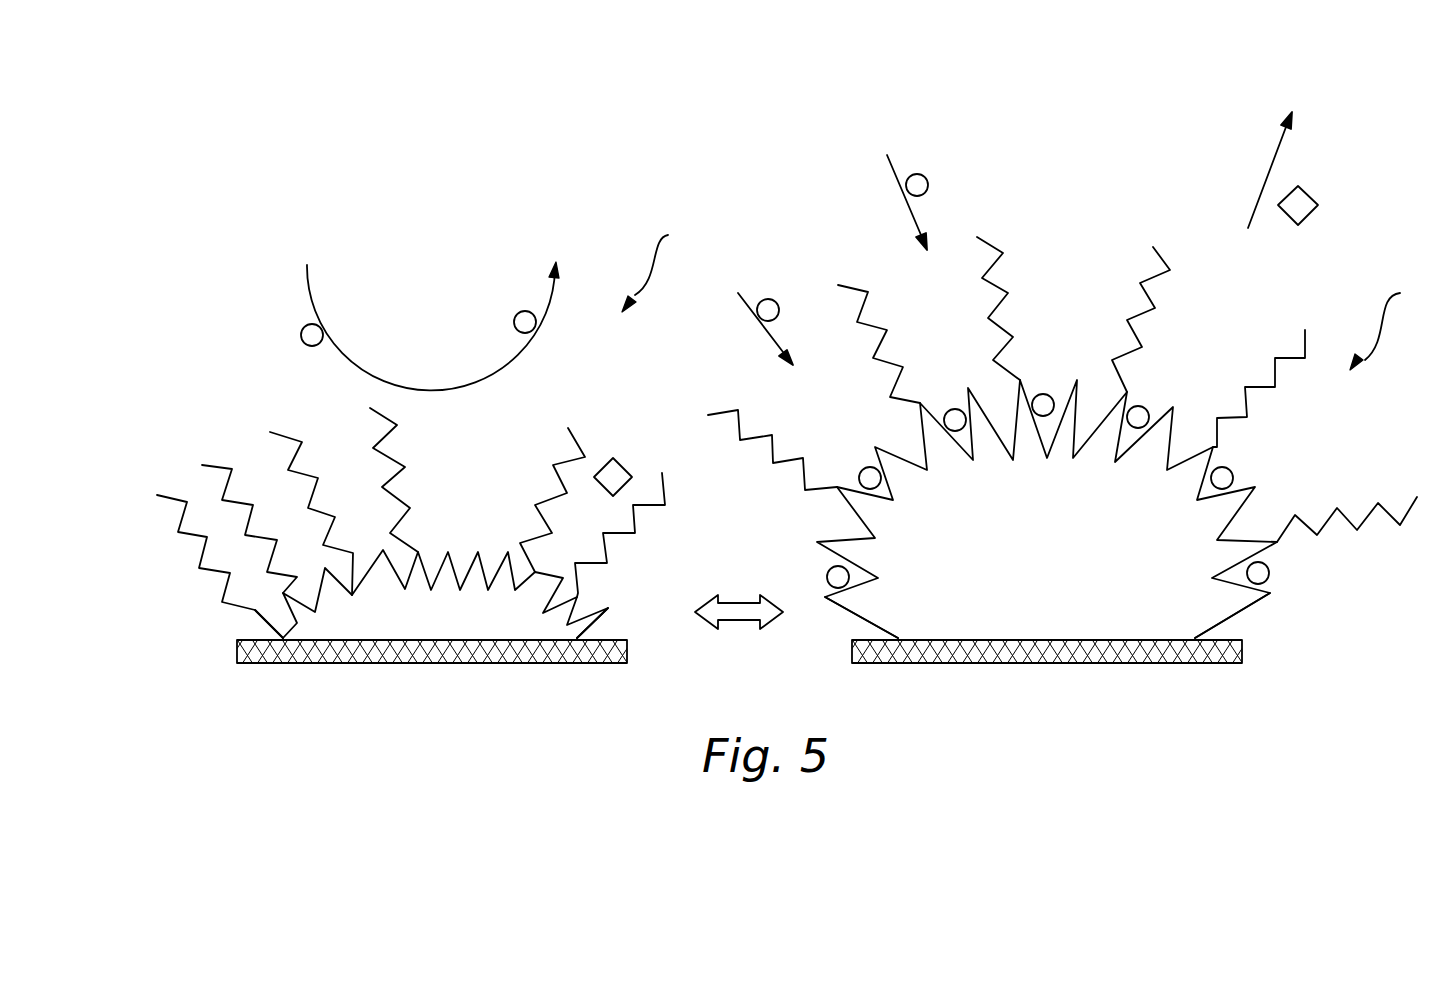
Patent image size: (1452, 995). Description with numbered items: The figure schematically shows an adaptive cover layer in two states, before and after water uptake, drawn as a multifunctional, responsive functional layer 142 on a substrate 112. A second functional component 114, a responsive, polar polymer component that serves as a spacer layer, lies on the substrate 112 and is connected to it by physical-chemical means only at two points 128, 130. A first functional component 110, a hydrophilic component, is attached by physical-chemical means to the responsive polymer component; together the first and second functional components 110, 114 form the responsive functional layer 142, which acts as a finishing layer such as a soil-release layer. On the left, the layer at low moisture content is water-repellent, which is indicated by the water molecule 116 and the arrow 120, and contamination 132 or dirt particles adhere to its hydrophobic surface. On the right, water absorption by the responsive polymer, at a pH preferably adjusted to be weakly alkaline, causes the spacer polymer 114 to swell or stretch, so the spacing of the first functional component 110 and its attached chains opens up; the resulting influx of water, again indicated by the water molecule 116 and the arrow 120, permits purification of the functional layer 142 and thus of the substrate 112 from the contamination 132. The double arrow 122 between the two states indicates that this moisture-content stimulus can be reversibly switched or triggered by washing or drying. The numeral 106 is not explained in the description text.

The deposition process 106 is at (238, 172).
The first functional component 110 is at (287, 455).
The substrate 112 is at (450, 663).
The second functional component 114 is at (580, 604).
The water molecule 116 is at (303, 335).
The arrow 120 is at (890, 175).
The double arrow 122 is at (743, 617).
The point 128 is at (283, 637).
The point 130 is at (578, 637).
The contamination 132 is at (613, 462).
The responsive functional layer 142 is at (1030, 295).